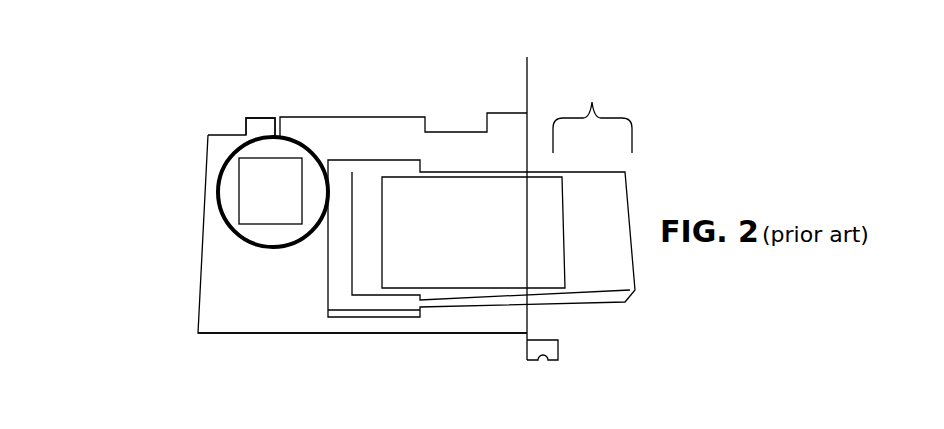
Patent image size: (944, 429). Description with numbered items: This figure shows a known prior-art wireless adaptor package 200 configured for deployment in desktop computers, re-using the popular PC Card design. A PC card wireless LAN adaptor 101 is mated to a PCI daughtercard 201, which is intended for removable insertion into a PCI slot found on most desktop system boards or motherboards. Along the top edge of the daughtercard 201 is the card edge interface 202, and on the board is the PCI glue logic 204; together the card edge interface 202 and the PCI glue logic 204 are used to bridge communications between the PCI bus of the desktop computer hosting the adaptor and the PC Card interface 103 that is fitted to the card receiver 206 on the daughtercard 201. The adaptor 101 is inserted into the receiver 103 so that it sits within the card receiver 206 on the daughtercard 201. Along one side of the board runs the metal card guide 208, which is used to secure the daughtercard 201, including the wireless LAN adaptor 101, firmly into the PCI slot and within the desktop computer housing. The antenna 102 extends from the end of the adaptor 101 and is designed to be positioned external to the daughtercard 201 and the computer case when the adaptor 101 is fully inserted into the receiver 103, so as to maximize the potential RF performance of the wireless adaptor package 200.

The prior art docking system 200 is at (148, 230).
The PCI daughtercard 201 is at (225, 303).
The card edge interface 202 is at (258, 118).
The PCI glue logic 204 is at (227, 157).
The card receiver 206 is at (290, 315).
The metal card guide 208 is at (524, 75).
The PC card wireless LAN adaptor 101 is at (548, 182).
The antenna 102 is at (592, 89).
The PC Card interface 103 is at (340, 300).